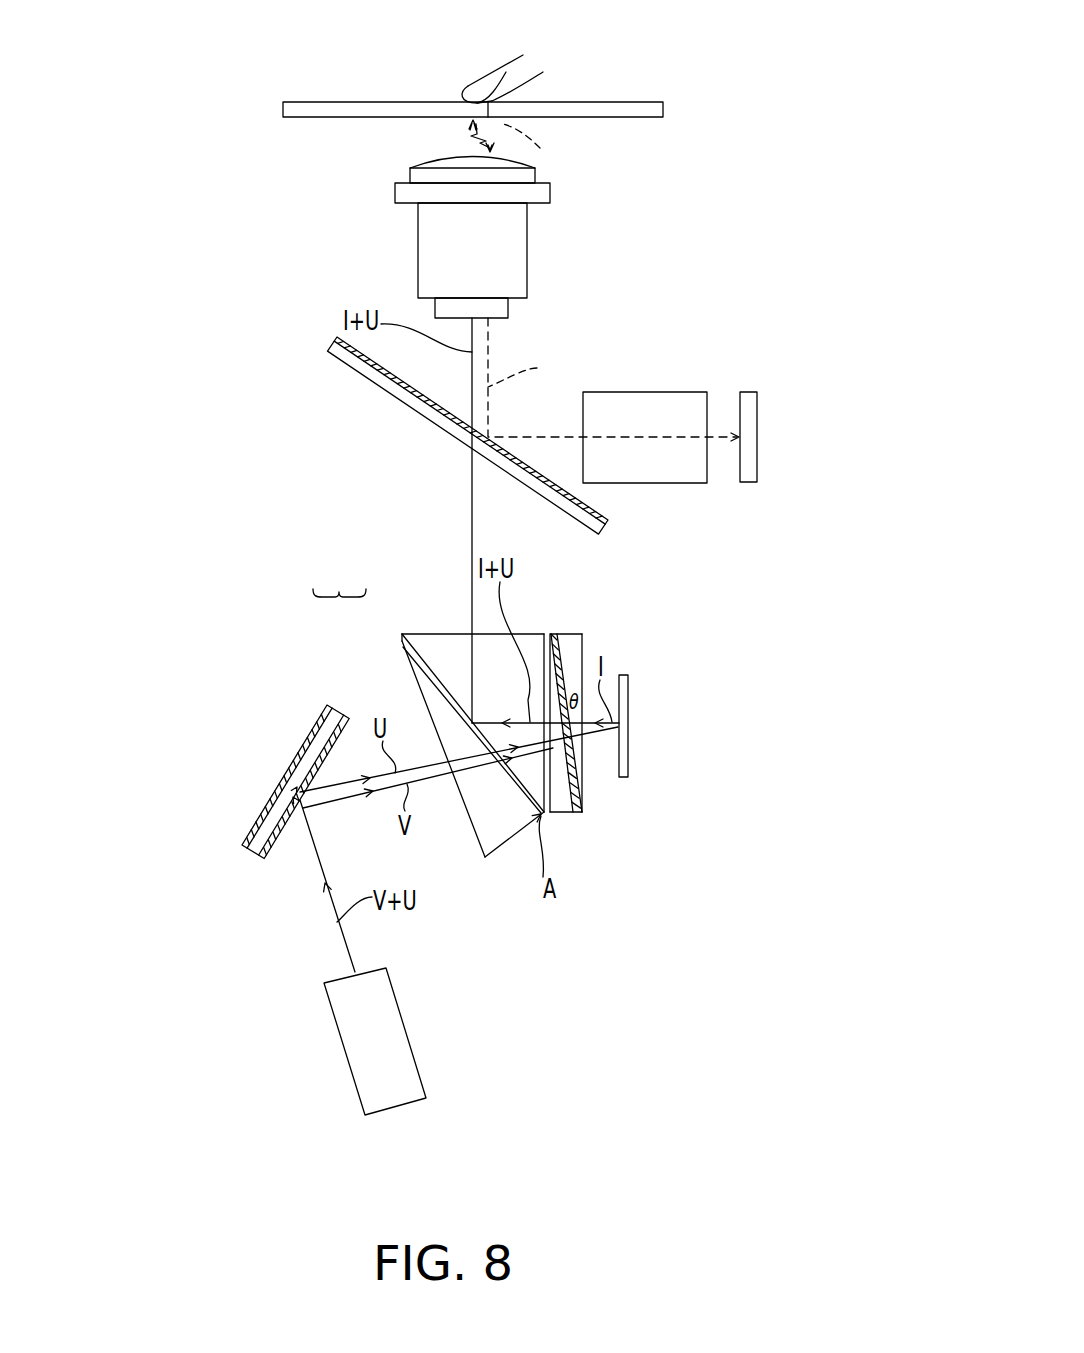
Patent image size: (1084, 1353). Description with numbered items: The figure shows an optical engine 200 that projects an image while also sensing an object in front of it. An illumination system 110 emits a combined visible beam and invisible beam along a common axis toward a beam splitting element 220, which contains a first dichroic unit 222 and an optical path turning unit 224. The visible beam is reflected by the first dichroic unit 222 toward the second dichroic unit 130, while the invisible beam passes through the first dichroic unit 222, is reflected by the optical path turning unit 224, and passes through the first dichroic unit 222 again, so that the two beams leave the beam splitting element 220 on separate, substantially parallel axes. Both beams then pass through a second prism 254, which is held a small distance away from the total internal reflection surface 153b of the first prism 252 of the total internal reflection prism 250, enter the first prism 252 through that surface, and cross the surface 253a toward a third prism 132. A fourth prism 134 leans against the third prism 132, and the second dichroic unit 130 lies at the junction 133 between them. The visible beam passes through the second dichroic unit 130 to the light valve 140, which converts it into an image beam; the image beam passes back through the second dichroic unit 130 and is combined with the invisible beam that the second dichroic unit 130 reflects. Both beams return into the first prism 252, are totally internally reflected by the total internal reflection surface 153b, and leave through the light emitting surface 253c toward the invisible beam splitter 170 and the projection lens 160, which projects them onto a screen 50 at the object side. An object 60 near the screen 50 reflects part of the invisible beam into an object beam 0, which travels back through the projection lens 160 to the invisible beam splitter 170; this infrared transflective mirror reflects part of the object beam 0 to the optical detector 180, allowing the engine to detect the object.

The screen 50 is at (667, 106).
The object 60 is at (505, 63).
The object beam 0 is at (604, 280).
The projection lens 160 is at (517, 250).
The invisible beam splitter 170 is at (315, 334).
The optical detector 180 is at (753, 467).
The total internal reflection prism 250 is at (339, 577).
The first prism 252 is at (437, 647).
The second prism 254 is at (420, 683).
The light emitting surface 253c is at (457, 632).
The surface of the first prism 253a is at (556, 794).
The total internal reflection surface 153b is at (517, 790).
The second dichroic unit 130 is at (553, 658).
The third prism 132 is at (578, 813).
The fourth prism 134 is at (577, 657).
The junction 133 is at (588, 807).
The light valve 140 is at (631, 702).
The beam splitting element 220 is at (251, 859).
The first dichroic unit 222 is at (277, 850).
The optical path turning unit 224 is at (270, 808).
The illumination system 110 is at (380, 1098).
The optical engine 200 is at (781, 1094).